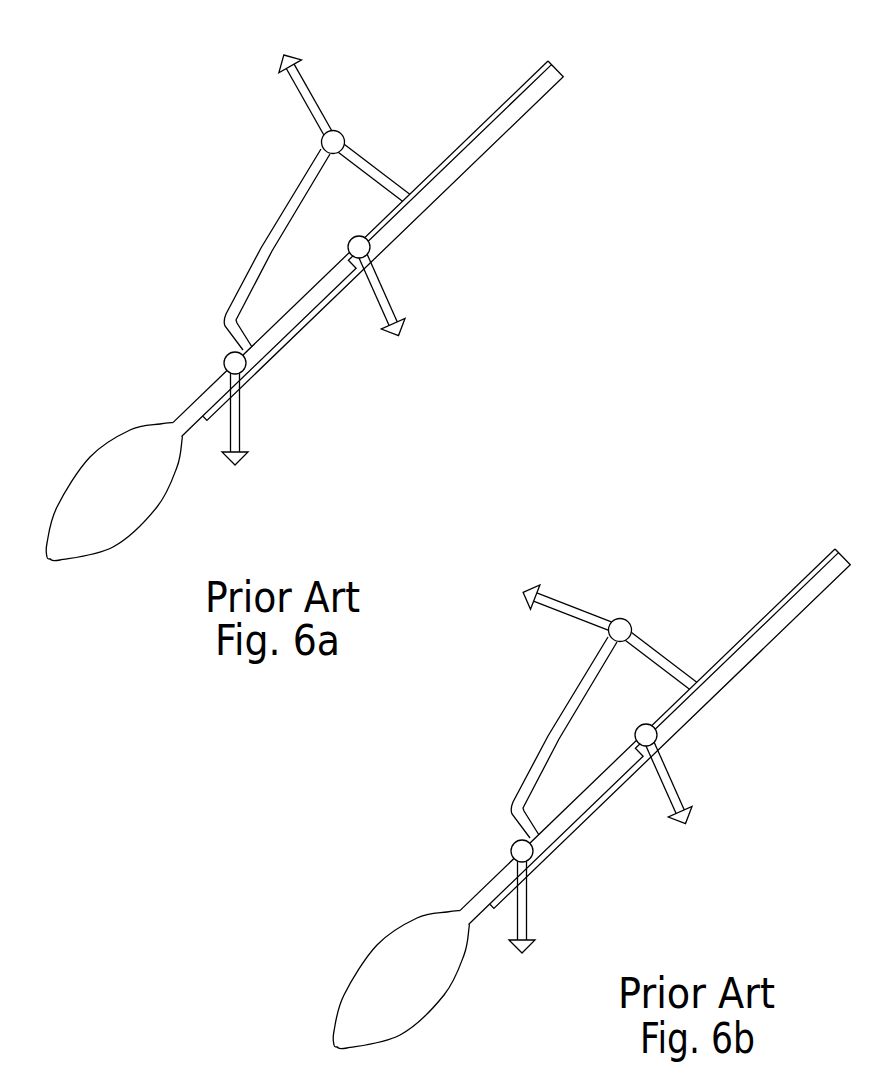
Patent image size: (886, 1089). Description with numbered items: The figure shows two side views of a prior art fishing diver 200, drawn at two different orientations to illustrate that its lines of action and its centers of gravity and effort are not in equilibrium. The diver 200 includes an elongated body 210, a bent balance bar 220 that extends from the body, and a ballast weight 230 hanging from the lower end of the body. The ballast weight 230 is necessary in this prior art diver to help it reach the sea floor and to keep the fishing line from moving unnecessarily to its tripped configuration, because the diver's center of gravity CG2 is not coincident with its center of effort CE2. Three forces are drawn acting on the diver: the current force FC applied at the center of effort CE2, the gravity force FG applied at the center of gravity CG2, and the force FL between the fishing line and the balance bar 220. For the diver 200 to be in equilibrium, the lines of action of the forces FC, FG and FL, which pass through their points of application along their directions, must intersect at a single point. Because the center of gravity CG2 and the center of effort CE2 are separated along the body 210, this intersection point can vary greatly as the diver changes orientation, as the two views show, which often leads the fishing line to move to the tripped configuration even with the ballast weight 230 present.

In FIG. 6A, the prior art fishing diver 200 is at (325, 294).
In FIG. 6B, the prior art fishing diver 200 is at (576, 733).
In FIG. 6A, the body 210 is at (545, 115).
In FIG. 6B, the body 210 is at (750, 602).
In FIG. 6A, the balance bar 220 is at (252, 250).
In FIG. 6B, the balance bar 220 is at (521, 740).
In FIG. 6A, the ballast weight 230 is at (83, 455).
In FIG. 6B, the ballast weight 230 is at (362, 957).
In FIG. 6A, the center of effort CE2 is at (368, 240).
In FIG. 6B, the center of effort CE2 is at (654, 731).
In FIG. 6A, the center of gravity CG2 is at (247, 362).
In FIG. 6B, the center of gravity CG2 is at (533, 855).
In FIG. 6A, the line force FL is at (318, 100).
In FIG. 6B, the line force FL is at (583, 605).
In FIG. 6A, the current force FC is at (388, 297).
In FIG. 6B, the current force FC is at (678, 771).
In FIG. 6A, the gravity force FG is at (242, 420).
In FIG. 6B, the gravity force FG is at (528, 910).